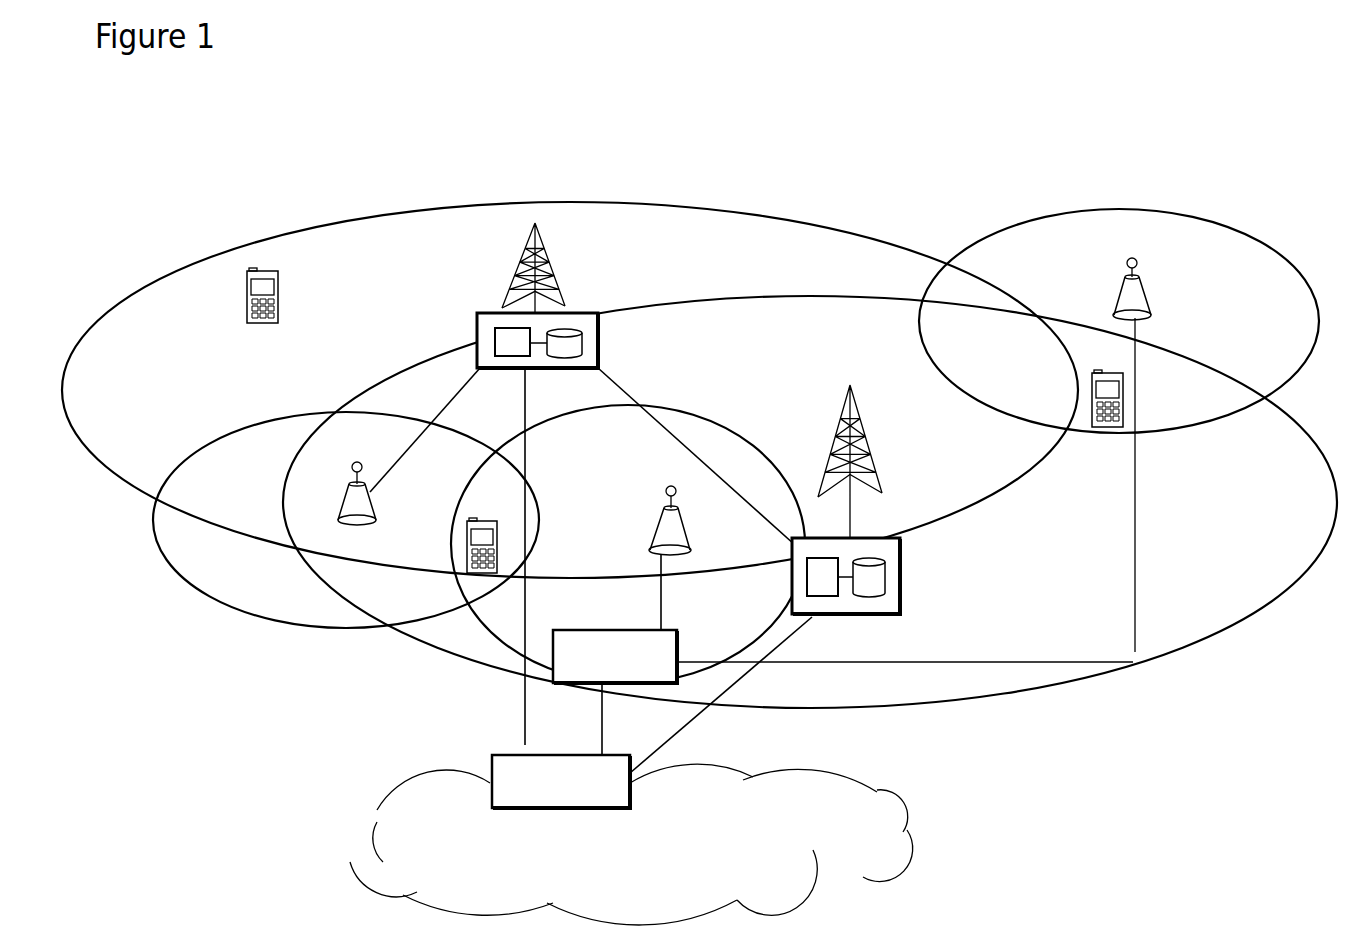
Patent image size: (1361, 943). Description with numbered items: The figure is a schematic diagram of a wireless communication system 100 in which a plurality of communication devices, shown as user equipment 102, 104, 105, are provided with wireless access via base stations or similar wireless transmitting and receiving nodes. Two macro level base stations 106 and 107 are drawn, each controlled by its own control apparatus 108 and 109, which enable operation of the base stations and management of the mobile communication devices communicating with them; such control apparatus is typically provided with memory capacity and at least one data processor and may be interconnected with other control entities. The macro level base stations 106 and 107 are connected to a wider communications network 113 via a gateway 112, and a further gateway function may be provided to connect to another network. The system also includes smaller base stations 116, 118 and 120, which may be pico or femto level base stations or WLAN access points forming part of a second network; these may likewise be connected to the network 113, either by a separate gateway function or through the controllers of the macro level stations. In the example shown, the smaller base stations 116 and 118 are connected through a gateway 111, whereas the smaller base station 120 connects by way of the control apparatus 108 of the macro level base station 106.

The wireless communication system 100 is at (166, 254).
The communication device 102 is at (246, 312).
The communication device 104 is at (468, 548).
The communication device 105 is at (1107, 428).
The macro level base station 106 is at (517, 275).
The macro level base station 107 is at (876, 460).
The control apparatus 108 is at (477, 330).
The control apparatus 109 is at (890, 603).
The gateway 111 is at (560, 662).
The gateway 112 is at (495, 755).
The wider communications network 113 is at (410, 818).
The smaller base station 116 is at (1115, 293).
The smaller base station 118 is at (670, 540).
The smaller base station 120 is at (345, 497).